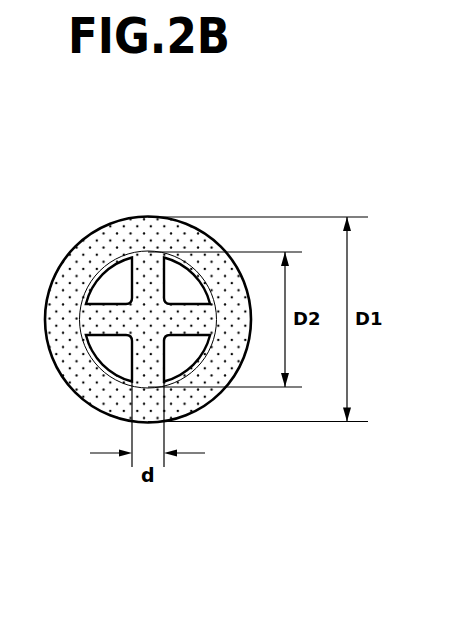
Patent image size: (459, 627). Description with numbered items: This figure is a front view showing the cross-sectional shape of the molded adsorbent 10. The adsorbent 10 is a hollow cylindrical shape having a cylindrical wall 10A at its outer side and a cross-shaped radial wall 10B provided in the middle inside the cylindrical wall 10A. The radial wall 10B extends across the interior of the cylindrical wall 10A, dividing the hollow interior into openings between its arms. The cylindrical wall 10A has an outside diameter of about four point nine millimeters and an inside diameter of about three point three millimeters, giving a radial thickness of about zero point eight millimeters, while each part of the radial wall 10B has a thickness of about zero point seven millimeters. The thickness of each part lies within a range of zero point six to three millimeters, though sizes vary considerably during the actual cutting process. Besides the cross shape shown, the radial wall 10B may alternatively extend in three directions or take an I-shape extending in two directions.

The adsorbent 10 is at (148, 262).
The cylindrical wall 10A is at (98, 247).
The radial wall 10B is at (140, 352).